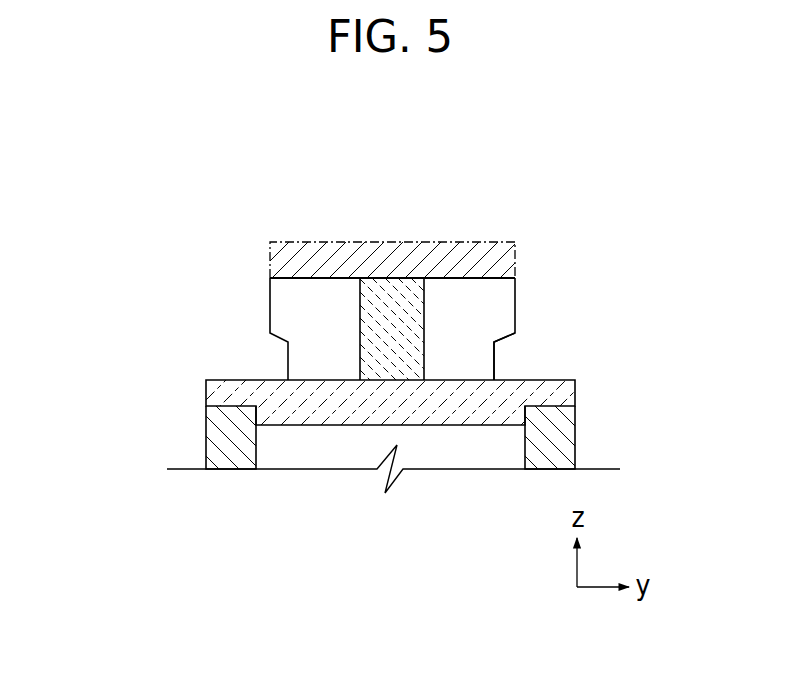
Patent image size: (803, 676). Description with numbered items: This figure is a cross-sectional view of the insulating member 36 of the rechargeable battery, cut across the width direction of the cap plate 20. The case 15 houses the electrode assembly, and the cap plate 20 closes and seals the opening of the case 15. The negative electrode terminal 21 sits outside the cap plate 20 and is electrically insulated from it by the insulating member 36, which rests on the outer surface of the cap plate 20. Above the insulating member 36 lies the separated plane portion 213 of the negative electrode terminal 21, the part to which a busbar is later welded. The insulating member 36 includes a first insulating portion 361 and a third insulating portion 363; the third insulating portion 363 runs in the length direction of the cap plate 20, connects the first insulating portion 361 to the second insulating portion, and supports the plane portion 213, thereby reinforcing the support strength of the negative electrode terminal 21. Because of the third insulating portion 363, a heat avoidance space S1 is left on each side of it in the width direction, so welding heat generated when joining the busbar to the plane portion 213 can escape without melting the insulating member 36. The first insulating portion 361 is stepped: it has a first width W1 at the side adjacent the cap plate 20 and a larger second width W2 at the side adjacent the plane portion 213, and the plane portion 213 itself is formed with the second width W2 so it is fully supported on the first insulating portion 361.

The plane portion 213 is at (392, 214).
The negative electrode terminal 21 is at (350, 241).
The third insulating portion 363 is at (425, 302).
The insulating member 36 is at (444, 273).
The first insulating portion 361 is at (498, 340).
The cap plate 20 is at (456, 404).
The case 15 is at (226, 436).
The heat avoidance space S1 is at (345, 342).
The first width W1 is at (288, 362).
The second width W2 is at (515, 317).